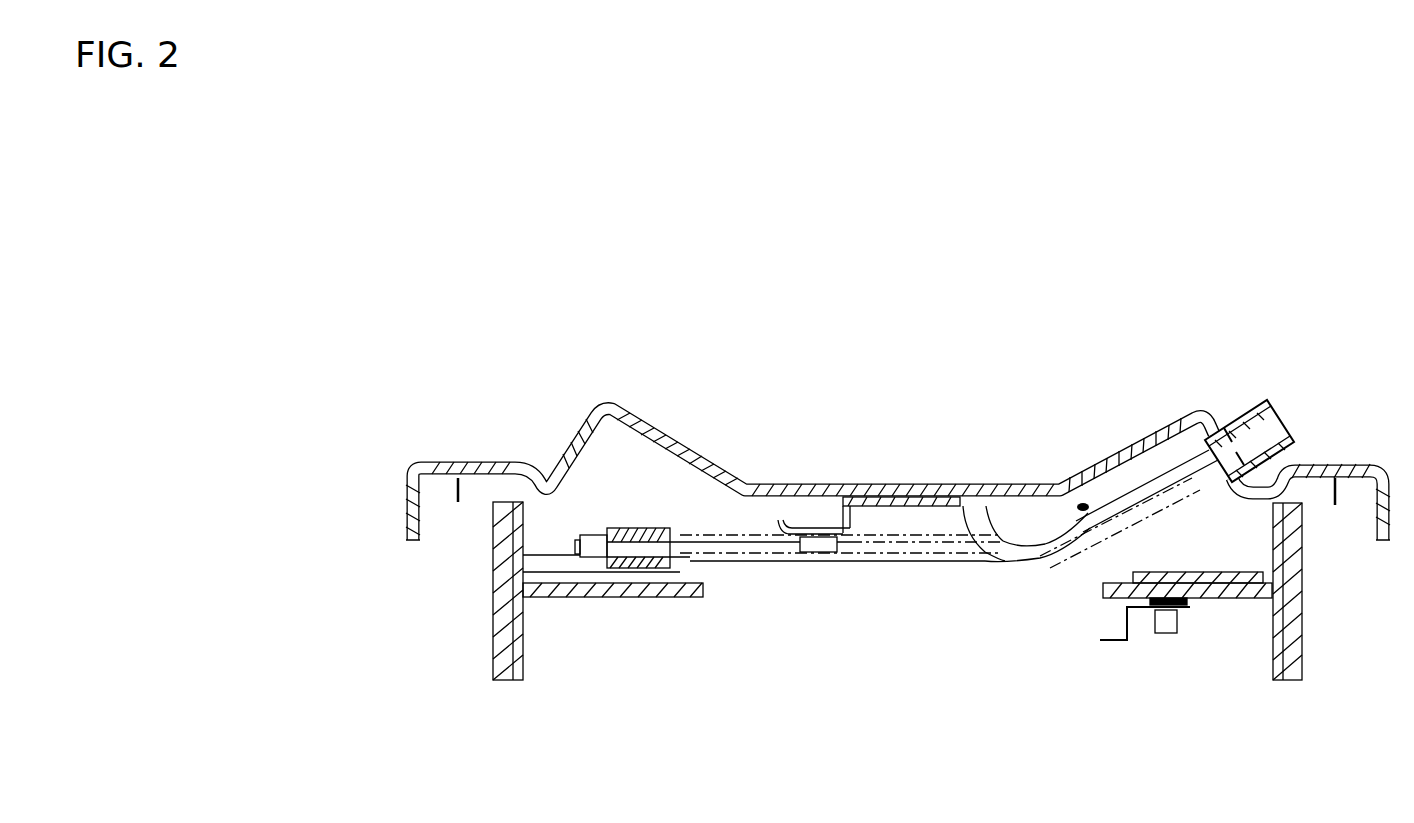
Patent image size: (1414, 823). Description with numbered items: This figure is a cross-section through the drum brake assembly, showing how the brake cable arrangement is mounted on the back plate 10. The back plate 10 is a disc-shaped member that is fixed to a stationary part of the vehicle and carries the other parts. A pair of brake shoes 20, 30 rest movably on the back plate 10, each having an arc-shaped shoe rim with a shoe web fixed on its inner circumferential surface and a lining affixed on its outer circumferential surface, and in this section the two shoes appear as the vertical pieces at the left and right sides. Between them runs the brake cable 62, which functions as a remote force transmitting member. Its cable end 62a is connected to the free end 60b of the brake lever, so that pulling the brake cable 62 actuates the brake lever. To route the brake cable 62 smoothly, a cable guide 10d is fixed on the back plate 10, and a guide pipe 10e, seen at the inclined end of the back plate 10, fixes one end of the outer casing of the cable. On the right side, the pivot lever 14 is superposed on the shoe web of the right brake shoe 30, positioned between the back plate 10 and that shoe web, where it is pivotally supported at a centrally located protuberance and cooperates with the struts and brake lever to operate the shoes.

The back plate 10 is at (872, 480).
The cable guide 10d is at (1008, 515).
The guide pipe 10e is at (1244, 404).
The pivot lever 14 is at (1210, 573).
The brake shoe 20 is at (516, 684).
The brake shoe 30 is at (1290, 684).
The free end of the brake lever 60b is at (668, 527).
The brake cable 62 is at (783, 568).
The cable end 62a is at (572, 446).